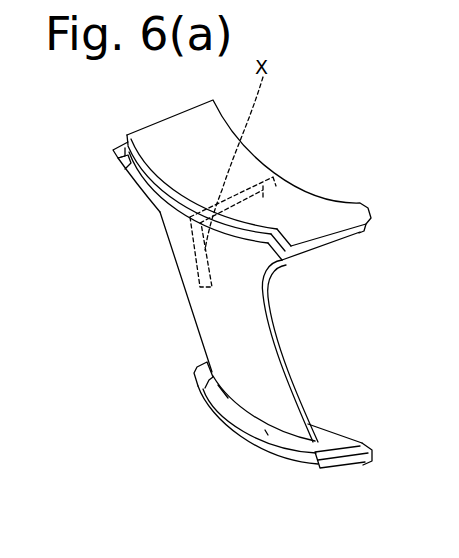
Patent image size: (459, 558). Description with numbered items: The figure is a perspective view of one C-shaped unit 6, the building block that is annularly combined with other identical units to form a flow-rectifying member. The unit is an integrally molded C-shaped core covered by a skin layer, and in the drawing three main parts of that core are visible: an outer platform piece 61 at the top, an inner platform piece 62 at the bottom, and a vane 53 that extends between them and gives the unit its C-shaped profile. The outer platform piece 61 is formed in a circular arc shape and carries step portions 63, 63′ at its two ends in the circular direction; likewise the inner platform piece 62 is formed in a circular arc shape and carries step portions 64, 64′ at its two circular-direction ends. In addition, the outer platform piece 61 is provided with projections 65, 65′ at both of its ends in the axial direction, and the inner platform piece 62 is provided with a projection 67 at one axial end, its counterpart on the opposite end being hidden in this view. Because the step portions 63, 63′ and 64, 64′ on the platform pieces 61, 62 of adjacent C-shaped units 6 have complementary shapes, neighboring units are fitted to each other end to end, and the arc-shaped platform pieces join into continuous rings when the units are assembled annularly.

The C-shaped unit 6 is at (138, 293).
The vane 53 is at (210, 322).
The outer platform piece 61 is at (308, 207).
The inner platform piece 62 is at (328, 442).
The step portion 63 is at (123, 152).
The step portion 63′ is at (366, 231).
The step portion 64 is at (367, 450).
The step portion 64′ is at (265, 448).
The projection 65 is at (273, 266).
The projection 65′ is at (116, 165).
The projection 67 is at (350, 466).